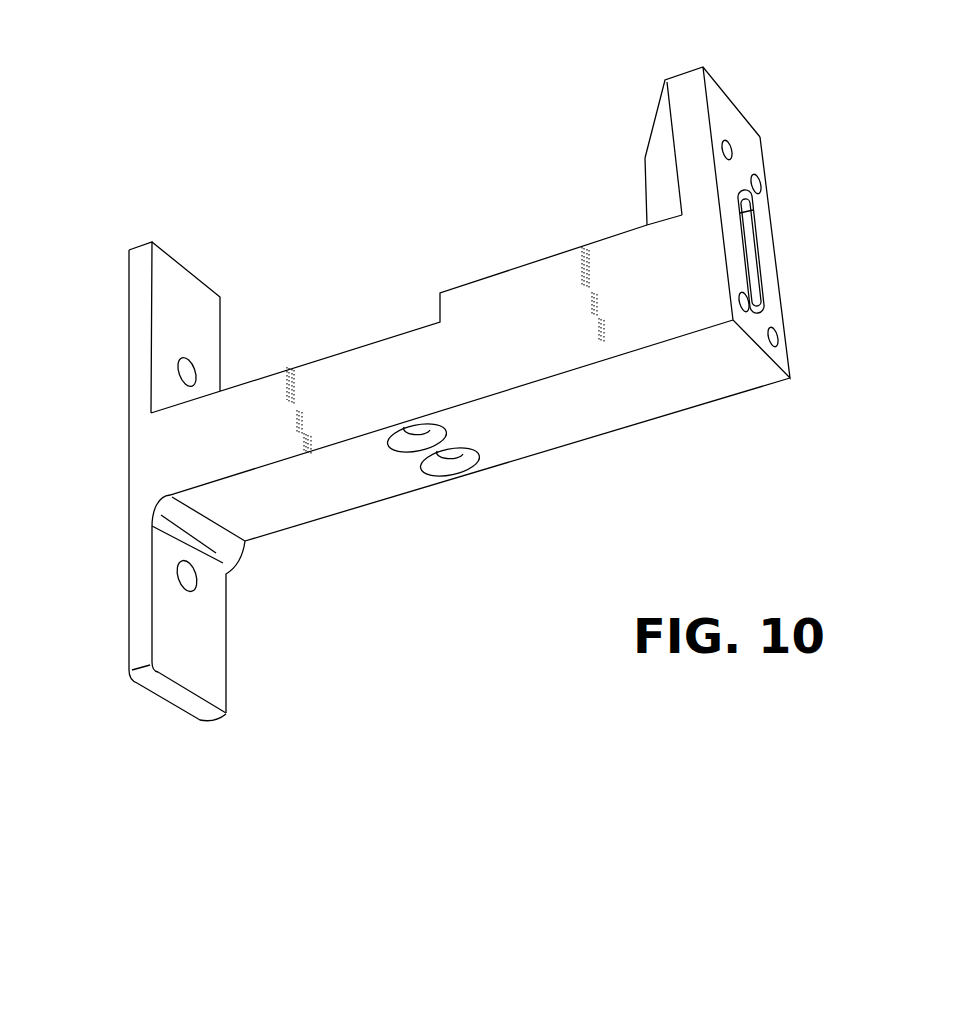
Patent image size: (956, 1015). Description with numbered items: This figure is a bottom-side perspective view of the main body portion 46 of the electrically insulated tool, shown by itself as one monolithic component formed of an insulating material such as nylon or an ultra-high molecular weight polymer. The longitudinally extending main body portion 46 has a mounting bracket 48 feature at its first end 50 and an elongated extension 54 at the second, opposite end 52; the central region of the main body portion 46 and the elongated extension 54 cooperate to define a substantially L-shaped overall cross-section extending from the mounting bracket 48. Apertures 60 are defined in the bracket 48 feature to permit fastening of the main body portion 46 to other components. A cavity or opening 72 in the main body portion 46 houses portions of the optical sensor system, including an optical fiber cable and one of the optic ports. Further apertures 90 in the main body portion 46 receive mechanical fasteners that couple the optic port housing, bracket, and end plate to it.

The main body portion 46 is at (96, 546).
The mounting bracket 48 is at (190, 287).
The first end 50 is at (154, 711).
The second end 52 is at (768, 396).
The elongated extension 54 is at (718, 93).
The apertures 60 is at (193, 370).
The cavity or opening 72 is at (748, 228).
The apertures 90 is at (402, 447).